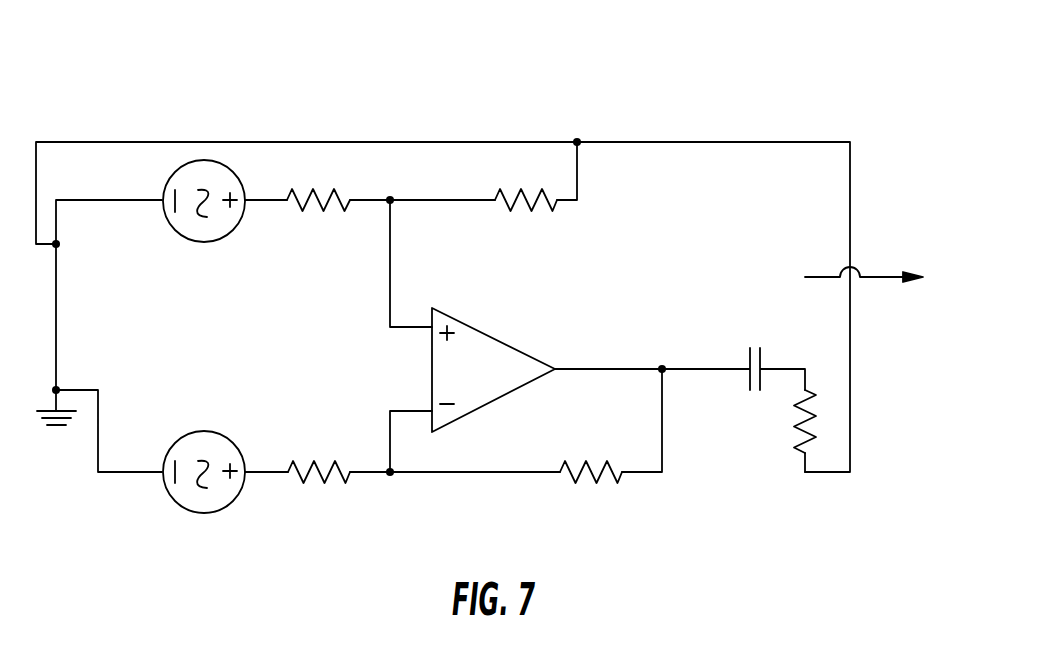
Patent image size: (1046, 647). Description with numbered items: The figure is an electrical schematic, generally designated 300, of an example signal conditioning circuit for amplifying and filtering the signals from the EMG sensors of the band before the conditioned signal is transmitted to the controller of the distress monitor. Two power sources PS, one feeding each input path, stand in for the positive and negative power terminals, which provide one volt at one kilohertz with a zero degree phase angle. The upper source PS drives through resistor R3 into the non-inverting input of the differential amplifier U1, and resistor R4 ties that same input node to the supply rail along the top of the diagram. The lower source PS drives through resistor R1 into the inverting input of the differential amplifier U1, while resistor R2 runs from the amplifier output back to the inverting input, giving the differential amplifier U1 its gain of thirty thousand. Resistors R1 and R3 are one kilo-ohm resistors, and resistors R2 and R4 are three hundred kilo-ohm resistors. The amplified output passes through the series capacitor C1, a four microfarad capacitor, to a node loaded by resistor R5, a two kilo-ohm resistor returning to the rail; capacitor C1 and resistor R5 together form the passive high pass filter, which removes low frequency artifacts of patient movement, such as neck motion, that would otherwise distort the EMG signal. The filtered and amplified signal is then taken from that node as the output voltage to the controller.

The EMG circuit 300 is at (479, 280).
The power source PS is at (204, 221).
The resistor R1 is at (319, 456).
The resistor R2 is at (591, 456).
The resistor R3 is at (318, 220).
The resistor R4 is at (526, 220).
The resistor R5 is at (820, 421).
The capacitor C1 is at (755, 351).
The differential amplifier U1 is at (493, 368).